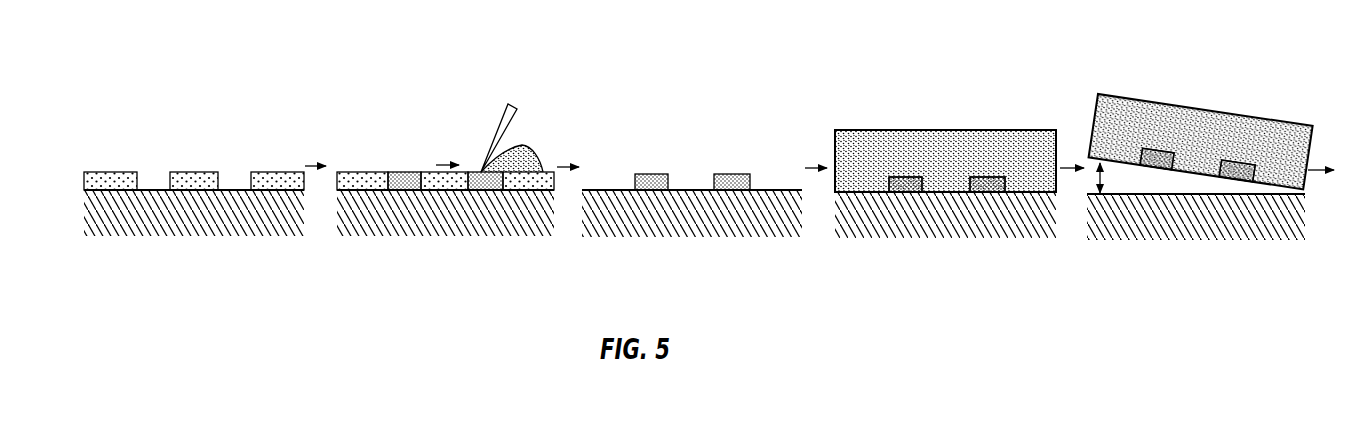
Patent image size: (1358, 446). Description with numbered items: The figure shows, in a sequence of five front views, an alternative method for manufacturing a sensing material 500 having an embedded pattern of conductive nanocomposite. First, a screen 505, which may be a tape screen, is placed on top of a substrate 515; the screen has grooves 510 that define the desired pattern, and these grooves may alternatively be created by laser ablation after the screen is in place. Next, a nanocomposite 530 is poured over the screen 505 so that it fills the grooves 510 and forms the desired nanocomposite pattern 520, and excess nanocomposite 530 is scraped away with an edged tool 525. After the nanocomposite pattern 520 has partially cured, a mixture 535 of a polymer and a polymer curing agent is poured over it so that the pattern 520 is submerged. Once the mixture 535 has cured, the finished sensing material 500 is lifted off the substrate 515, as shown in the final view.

The sensing material 500 is at (1125, 73).
The screen 505 is at (106, 170).
The grooves 510 is at (150, 170).
The substrate 515 is at (182, 213).
The nanocomposite pattern 520 is at (725, 173).
The edged tool 525 is at (504, 120).
The nanocomposite 530 is at (525, 146).
The mixture 535 is at (940, 148).